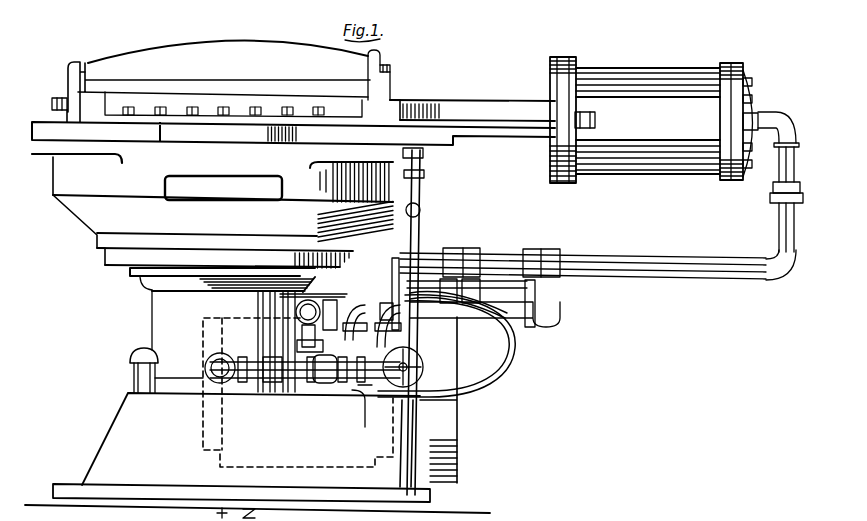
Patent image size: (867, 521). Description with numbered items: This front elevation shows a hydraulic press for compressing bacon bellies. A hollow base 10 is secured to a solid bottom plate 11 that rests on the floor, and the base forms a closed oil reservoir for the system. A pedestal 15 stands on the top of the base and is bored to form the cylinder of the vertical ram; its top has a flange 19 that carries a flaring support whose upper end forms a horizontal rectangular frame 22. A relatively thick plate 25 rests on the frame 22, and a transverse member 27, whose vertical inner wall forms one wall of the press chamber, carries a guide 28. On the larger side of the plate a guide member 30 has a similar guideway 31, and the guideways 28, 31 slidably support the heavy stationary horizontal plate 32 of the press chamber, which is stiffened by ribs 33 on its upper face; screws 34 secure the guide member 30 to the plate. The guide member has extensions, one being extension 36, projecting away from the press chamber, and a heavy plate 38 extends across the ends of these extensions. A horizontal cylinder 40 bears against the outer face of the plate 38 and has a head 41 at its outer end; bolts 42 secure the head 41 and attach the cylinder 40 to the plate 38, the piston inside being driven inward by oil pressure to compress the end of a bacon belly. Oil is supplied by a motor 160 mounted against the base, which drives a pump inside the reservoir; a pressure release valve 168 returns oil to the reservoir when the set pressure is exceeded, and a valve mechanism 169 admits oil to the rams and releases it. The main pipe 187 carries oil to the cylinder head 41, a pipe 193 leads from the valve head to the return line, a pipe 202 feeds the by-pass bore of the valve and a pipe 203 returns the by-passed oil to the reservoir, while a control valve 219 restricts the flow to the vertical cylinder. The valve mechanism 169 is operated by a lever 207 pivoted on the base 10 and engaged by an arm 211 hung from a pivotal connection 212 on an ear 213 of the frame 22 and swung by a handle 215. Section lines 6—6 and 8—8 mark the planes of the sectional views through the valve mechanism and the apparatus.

The section line 6— 6 is at (390, 284).
The section line 8— 8 is at (33, 105).
The hollow base structure 10 is at (107, 433).
The bottom plate 11 is at (55, 500).
The pedestal 15 is at (152, 326).
The flange 19 is at (152, 262).
The rectangular frame 22 is at (32, 146).
The thick plate 25 is at (42, 128).
The transverse member 27 is at (78, 62).
The guide 28 is at (97, 67).
The guide member 30 is at (392, 89).
The guideway 31 is at (367, 70).
The heavy plate 32 is at (282, 88).
The stiffening ribs 33 is at (233, 50).
The screws 34 is at (389, 67).
The extension 36 is at (533, 115).
The heavy plate 38 is at (560, 170).
The cylinder 40 is at (647, 88).
The cylinder head 41 is at (738, 67).
The bolts 42 is at (693, 77).
The motor 160 is at (203, 418).
The pressure release valve 168 is at (256, 303).
The valve mechanism 169 is at (380, 381).
The main pipe 187 is at (716, 265).
The pipe 193 is at (447, 341).
The pipe 202 is at (500, 385).
The pipe 203 is at (363, 402).
The lever 207 is at (398, 281).
The arm 211 is at (420, 241).
The pivotal connection 212 is at (424, 180).
The ear 213 is at (420, 158).
The handle 215 is at (421, 210).
The control valve 219 is at (322, 386).